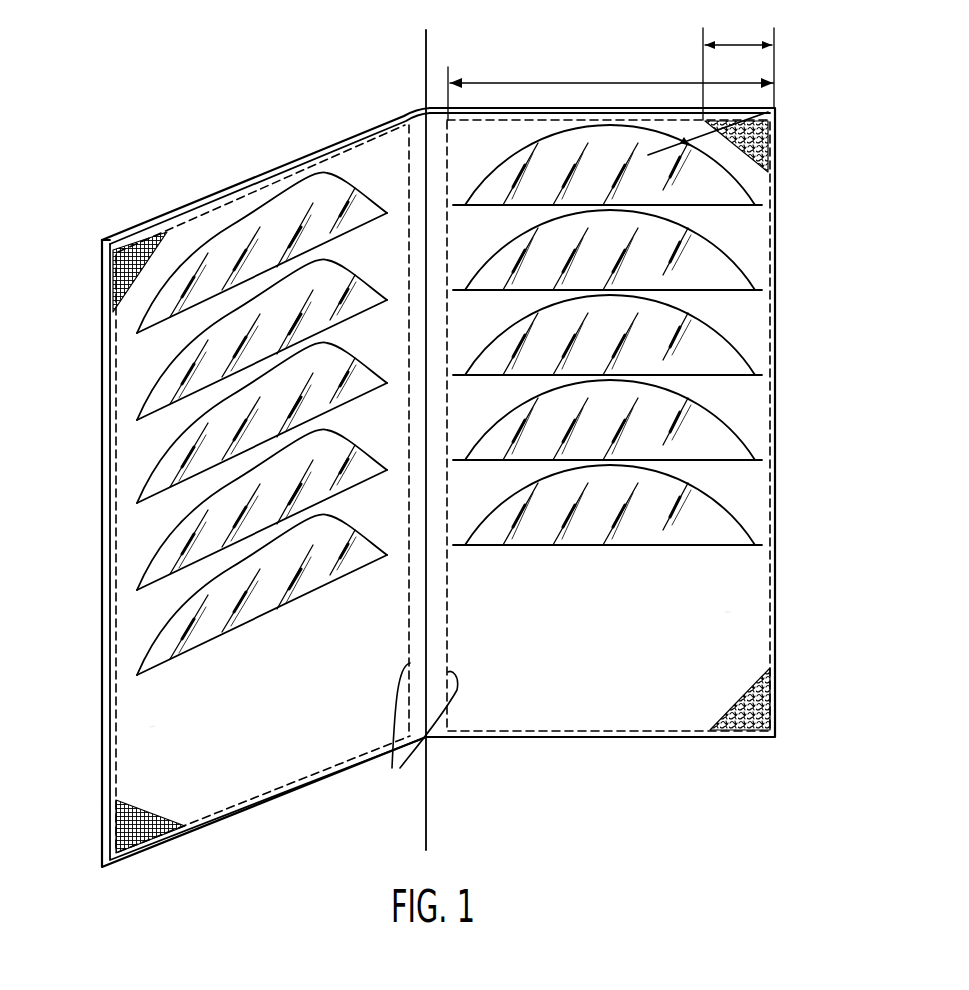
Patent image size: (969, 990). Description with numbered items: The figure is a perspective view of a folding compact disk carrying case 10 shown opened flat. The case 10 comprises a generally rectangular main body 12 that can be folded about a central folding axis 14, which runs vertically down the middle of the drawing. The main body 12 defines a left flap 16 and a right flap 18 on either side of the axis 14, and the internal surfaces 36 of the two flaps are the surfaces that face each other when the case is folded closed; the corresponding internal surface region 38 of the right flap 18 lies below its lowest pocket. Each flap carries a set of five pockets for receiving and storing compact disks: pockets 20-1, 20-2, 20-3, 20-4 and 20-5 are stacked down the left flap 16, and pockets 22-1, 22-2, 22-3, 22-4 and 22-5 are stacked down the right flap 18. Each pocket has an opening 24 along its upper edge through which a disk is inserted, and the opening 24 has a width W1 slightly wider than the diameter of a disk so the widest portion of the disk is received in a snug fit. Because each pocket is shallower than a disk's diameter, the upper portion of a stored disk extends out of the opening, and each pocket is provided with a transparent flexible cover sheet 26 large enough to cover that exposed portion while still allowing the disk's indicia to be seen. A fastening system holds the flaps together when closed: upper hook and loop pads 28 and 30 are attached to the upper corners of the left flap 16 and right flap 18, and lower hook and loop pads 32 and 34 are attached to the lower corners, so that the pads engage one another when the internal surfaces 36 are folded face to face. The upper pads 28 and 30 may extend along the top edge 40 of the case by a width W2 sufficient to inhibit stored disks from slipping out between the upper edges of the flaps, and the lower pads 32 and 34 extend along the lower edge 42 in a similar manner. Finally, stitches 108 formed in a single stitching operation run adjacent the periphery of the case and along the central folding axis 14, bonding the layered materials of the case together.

The folding compact disk carrying case 10 is at (193, 114).
The main body 12 is at (447, 437).
The central folding axis 14 is at (424, 50).
The left flap 16 is at (235, 487).
The right flap 18 is at (640, 420).
The pocket 20-1 is at (212, 252).
The pocket 20-2 is at (212, 339).
The pocket 20-3 is at (212, 422).
The pocket 20-4 is at (212, 509).
The pocket 20-5 is at (212, 594).
The pocket 22-1 is at (644, 178).
The pocket 22-2 is at (644, 250).
The pocket 22-3 is at (644, 335).
The pocket 22-4 is at (644, 420).
The pocket 22-5 is at (644, 505).
The opening 24 is at (672, 206).
The cover sheet 26 is at (768, 112).
The hook and loop pad 28 is at (133, 243).
The hook and loop pad 30 is at (762, 134).
The lower hook and loop pad 32 is at (140, 838).
The lower hook and loop pad 34 is at (767, 700).
The internal surface 36 is at (150, 727).
The lower area of right panel 38 is at (725, 612).
The top edge 40 is at (728, 108).
The lower edge 42 is at (660, 737).
The stitches 108 is at (377, 133).
The width of opening W1 is at (625, 74).
The width of hook and loop pad extension W2 is at (759, 41).